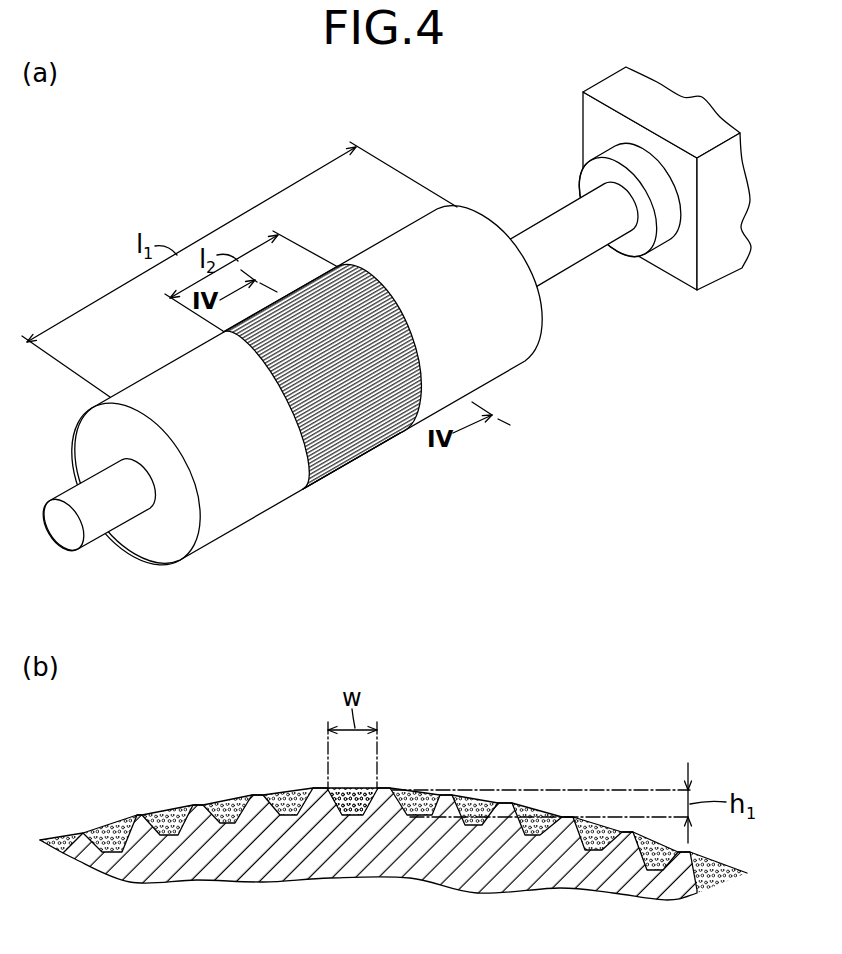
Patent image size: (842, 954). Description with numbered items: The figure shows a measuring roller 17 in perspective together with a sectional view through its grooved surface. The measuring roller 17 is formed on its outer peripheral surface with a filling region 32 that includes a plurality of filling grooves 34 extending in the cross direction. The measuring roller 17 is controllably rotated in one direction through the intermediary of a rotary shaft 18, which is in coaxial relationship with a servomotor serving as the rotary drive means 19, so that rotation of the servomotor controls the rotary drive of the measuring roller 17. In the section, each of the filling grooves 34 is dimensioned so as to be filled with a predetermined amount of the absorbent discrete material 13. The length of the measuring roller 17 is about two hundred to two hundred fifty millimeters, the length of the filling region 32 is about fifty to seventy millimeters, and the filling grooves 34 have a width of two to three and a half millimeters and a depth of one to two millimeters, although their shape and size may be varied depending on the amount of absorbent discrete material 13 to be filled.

The absorbent discrete material 13 is at (278, 795).
The measuring roller 17 is at (131, 367).
The rotary shaft 18 is at (552, 228).
The rotary drive means 19 is at (592, 132).
The filling region 32 is at (330, 462).
The filling grooves 34 is at (382, 328).